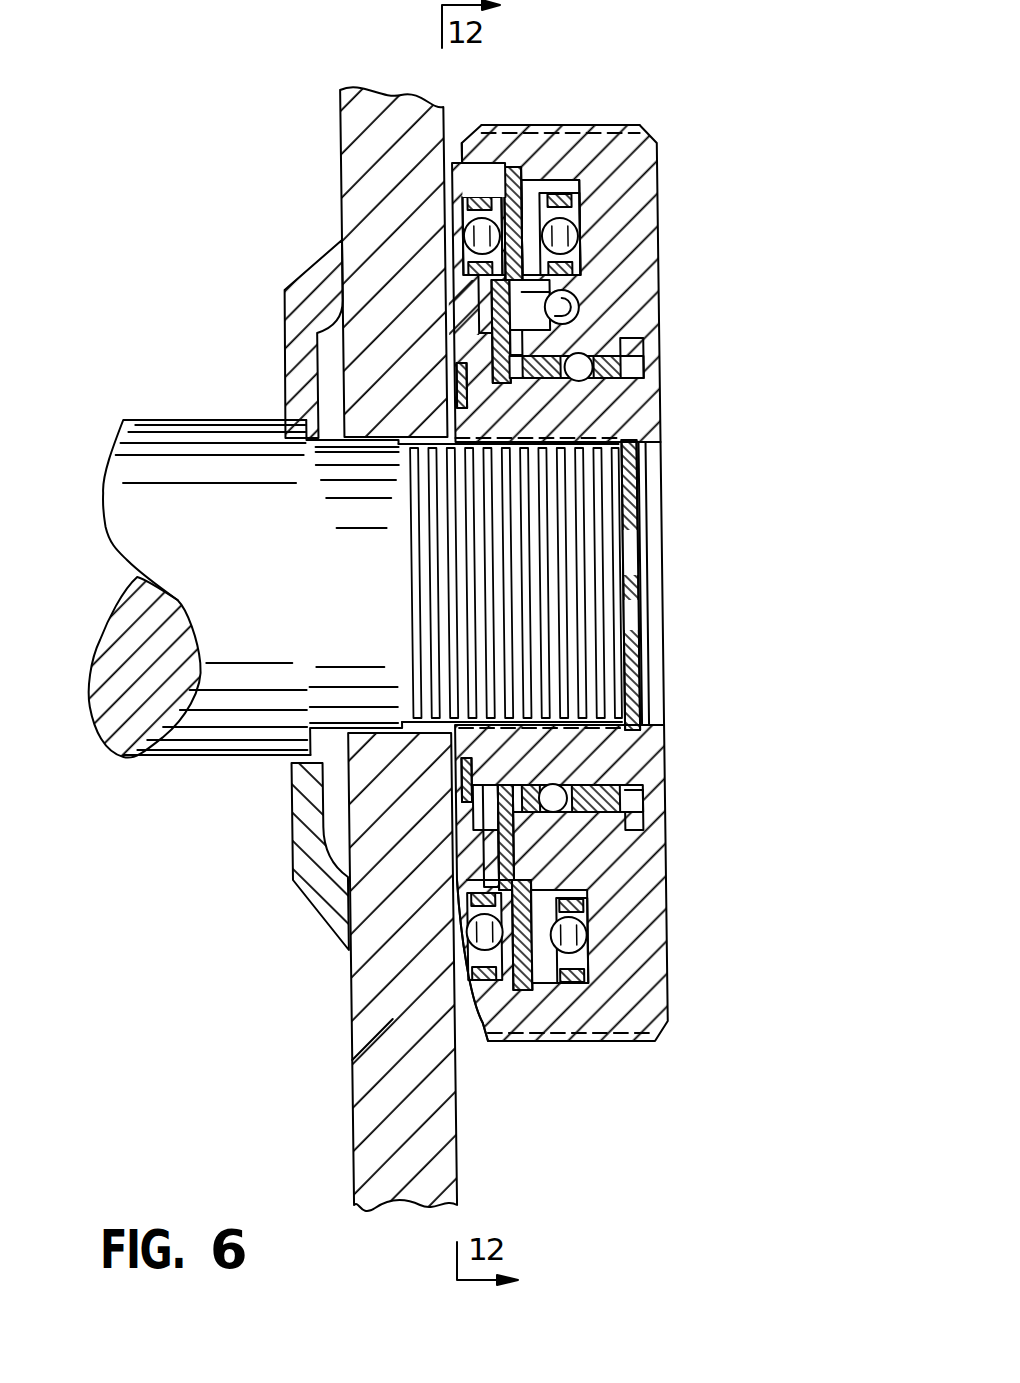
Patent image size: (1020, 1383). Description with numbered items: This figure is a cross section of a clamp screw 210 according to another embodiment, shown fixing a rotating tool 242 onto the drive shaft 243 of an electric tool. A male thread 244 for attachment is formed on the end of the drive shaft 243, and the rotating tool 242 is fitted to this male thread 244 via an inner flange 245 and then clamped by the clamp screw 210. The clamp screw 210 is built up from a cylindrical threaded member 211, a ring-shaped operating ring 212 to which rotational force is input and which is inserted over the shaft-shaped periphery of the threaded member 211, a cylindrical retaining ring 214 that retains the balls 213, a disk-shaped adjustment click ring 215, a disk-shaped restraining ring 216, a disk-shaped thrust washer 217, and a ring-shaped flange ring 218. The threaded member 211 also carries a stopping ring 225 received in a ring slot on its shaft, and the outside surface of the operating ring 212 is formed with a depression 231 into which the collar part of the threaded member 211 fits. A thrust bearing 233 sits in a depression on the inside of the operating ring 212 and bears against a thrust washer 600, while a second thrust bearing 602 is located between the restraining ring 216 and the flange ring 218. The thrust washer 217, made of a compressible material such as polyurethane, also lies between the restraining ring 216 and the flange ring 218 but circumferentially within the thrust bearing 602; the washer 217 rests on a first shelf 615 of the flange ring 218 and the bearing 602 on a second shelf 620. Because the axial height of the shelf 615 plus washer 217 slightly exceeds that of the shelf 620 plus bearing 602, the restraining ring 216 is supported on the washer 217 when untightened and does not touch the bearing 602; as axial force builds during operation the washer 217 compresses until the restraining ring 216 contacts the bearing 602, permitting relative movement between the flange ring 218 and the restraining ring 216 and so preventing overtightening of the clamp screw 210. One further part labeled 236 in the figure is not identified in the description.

The clamp screw 210 is at (712, 121).
The threaded member 211 is at (641, 407).
The operating ring 212 is at (655, 182).
The balls 213 is at (620, 325).
The retaining ring 214 is at (631, 364).
The adjustment click ring 215 is at (497, 240).
The restraining ring 216 is at (456, 190).
The thrust washer 217 is at (450, 330).
The flange ring 218 is at (452, 170).
The stopping ring 225 is at (455, 385).
The depression 231 is at (640, 820).
The thrust bearing 233 is at (592, 205).
The snap ring 236 is at (578, 300).
The rotating tool 242 is at (357, 950).
The drive shaft 243 is at (167, 757).
The male thread 244 is at (598, 642).
The inner flange 245 is at (284, 303).
The thrust washer 600 is at (545, 195).
The thrust bearing 602 is at (460, 232).
The first shelf 615 is at (452, 885).
The second shelf 620 is at (460, 900).